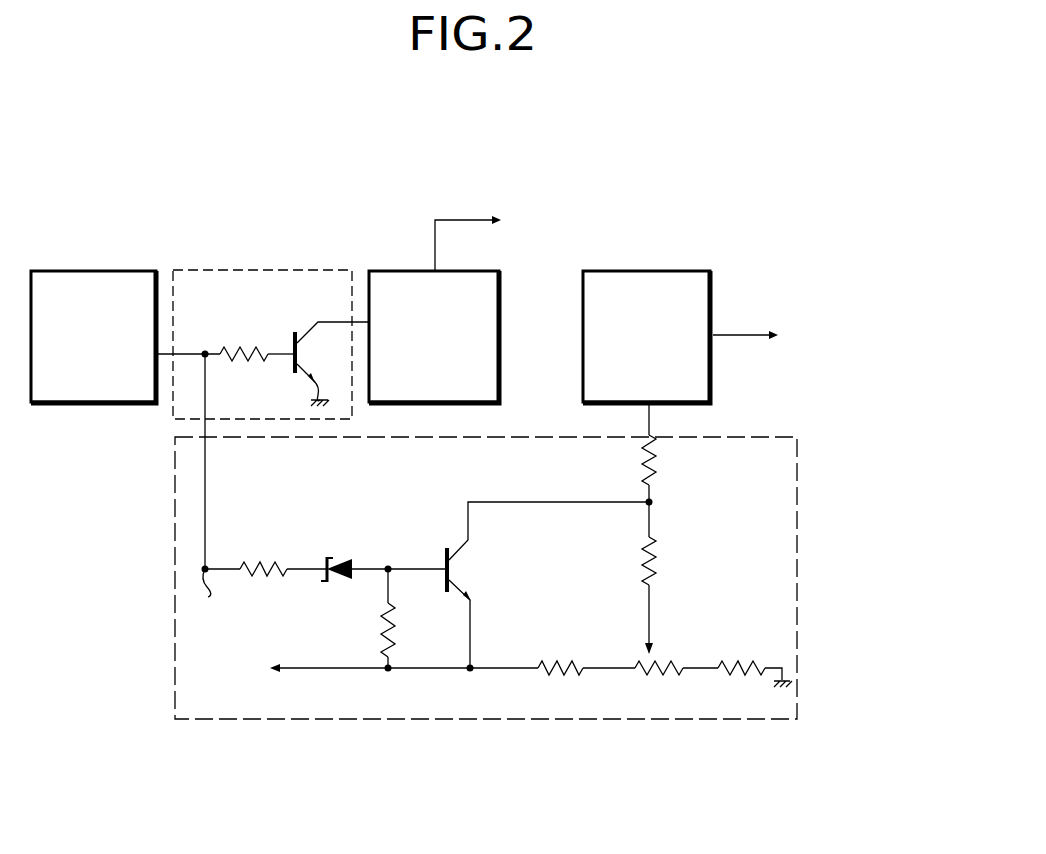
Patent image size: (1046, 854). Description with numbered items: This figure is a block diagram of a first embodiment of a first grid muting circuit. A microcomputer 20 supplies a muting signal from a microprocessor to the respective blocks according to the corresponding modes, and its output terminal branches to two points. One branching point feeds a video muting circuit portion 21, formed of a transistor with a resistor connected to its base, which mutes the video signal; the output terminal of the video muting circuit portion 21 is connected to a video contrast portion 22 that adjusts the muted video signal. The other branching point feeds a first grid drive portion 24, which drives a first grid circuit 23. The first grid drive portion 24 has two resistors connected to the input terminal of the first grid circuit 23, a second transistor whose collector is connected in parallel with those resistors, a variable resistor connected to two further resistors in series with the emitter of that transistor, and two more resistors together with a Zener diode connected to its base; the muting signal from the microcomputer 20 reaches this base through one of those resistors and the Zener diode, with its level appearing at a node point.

The microcomputer 20 is at (98, 405).
The video muting circuit portion 21 is at (271, 321).
The video contrast portion 22 is at (501, 332).
The first grid circuit 23 is at (713, 278).
The first grid drive portion 24 is at (453, 561).